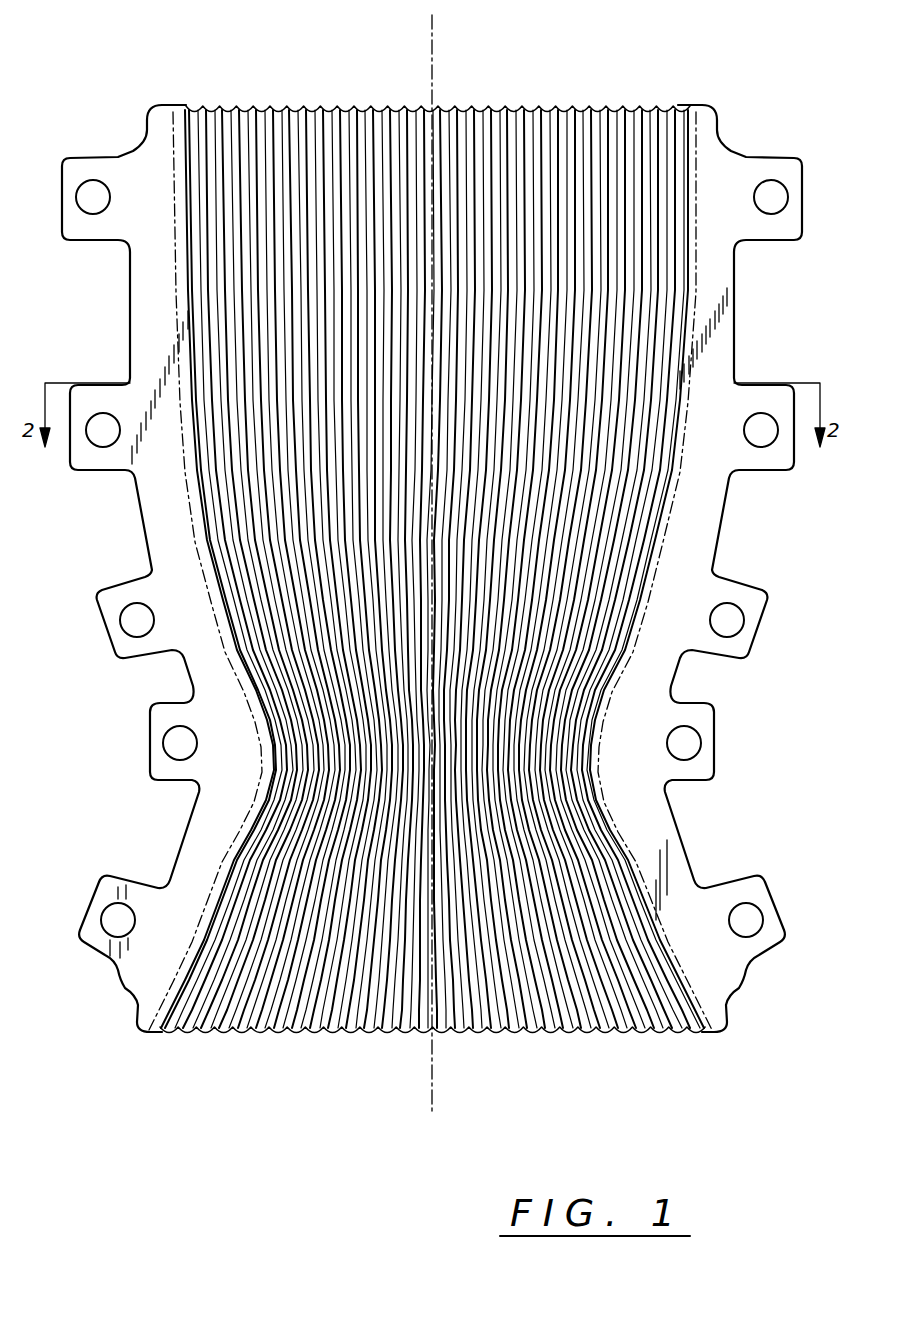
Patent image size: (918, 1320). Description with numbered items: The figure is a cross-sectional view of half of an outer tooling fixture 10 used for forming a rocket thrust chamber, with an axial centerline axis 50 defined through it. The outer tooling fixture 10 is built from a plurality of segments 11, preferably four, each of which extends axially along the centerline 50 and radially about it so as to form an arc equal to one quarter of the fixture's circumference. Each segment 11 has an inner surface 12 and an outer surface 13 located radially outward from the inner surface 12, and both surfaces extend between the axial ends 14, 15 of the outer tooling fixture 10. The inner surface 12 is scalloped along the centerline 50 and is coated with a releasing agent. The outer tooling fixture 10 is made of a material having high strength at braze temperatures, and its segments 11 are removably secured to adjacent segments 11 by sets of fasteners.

The outer tooling fixture 10 is at (142, 92).
The segment 11 is at (350, 1030).
The inner surface 12 is at (303, 148).
The outer surface 13 is at (130, 305).
The axial end 14 is at (705, 105).
The axial end 15 is at (147, 1035).
The axial centerline axis 50 is at (438, 64).